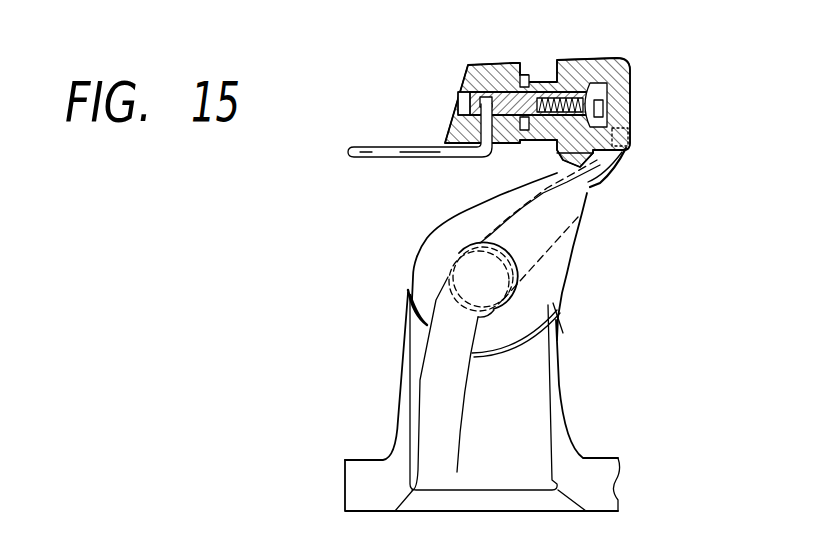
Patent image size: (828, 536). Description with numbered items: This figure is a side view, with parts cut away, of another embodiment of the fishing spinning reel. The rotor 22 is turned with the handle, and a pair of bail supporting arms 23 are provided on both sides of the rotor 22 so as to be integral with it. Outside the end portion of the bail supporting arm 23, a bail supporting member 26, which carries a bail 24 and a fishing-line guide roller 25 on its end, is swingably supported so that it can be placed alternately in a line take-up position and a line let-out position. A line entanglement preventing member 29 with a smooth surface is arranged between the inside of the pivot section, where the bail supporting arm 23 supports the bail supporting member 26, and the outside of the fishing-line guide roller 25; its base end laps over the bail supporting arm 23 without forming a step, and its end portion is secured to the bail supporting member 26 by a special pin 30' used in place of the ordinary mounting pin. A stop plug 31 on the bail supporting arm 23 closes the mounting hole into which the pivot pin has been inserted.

The rotor 22 is at (618, 487).
The bail supporting arm 23 is at (560, 380).
The bail 24 is at (362, 145).
The fishing-line guide roller 25 is at (541, 77).
The bail supporting member 26 is at (562, 262).
The line entanglement preventing member 29 is at (628, 86).
The special pin 30' is at (671, 142).
The stop plug 31 is at (470, 285).